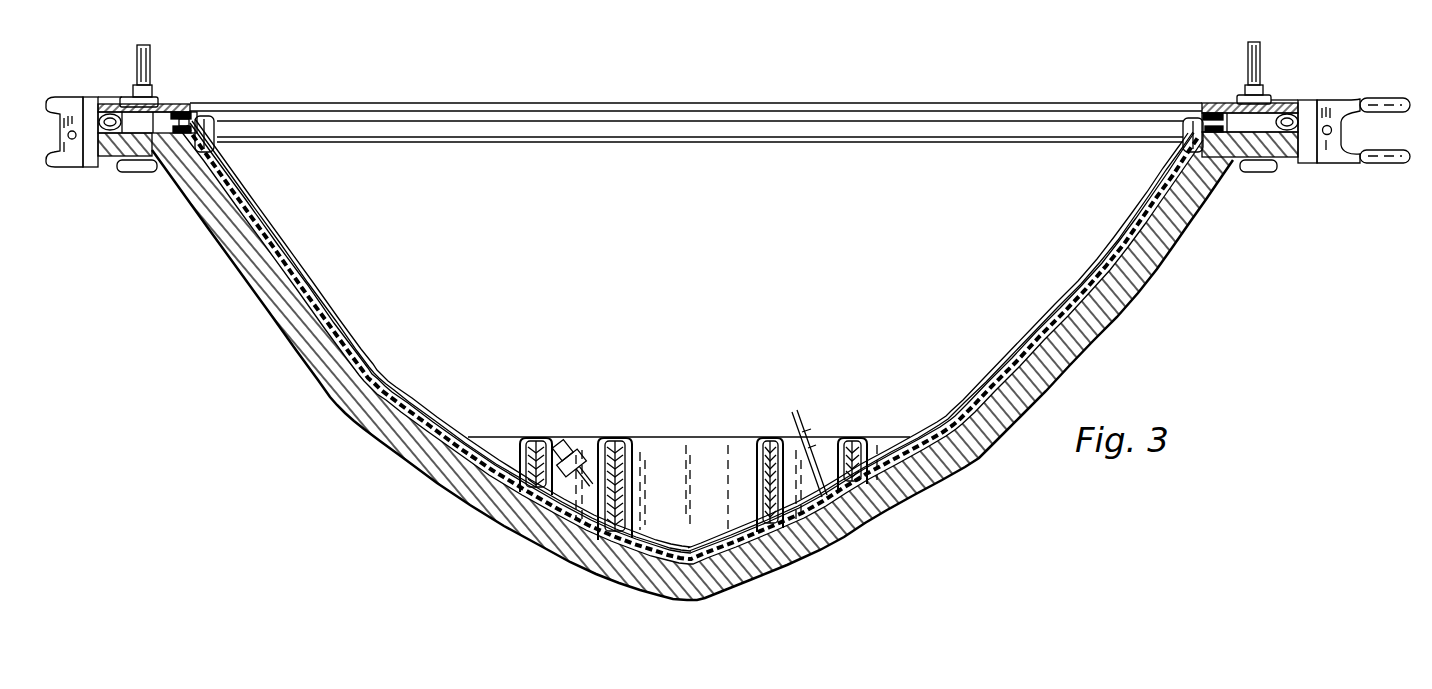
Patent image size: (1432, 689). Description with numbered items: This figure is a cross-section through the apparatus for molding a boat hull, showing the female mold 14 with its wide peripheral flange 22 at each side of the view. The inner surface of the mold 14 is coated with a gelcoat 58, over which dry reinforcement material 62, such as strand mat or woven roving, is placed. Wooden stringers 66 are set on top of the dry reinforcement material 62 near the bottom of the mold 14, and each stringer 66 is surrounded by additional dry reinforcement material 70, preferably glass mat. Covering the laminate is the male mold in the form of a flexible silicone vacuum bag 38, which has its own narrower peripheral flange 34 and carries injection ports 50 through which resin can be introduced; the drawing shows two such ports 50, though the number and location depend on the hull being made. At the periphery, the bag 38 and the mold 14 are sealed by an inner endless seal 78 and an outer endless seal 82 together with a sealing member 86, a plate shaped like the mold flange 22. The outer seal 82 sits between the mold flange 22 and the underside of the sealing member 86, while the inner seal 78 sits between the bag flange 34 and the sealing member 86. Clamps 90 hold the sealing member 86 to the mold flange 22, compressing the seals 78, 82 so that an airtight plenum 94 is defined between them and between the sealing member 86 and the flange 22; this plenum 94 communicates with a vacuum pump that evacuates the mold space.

The female mold 14 is at (332, 395).
The peripheral flange 22 is at (135, 147).
The peripheral flange 34 is at (203, 117).
The vacuum bag 38 is at (330, 300).
The injection port 50 is at (571, 458).
The gelcoat 58 is at (314, 320).
The dry reinforcement material 62 is at (350, 320).
The wooden stringer 66 is at (538, 448).
The additional dry reinforcement material 70 is at (508, 444).
The inner endless seal 78 is at (1190, 112).
The outer endless seal 82 is at (1297, 116).
The sealing member 86 is at (1222, 105).
The clamp 90 is at (72, 98).
The plenum 94 is at (157, 120).